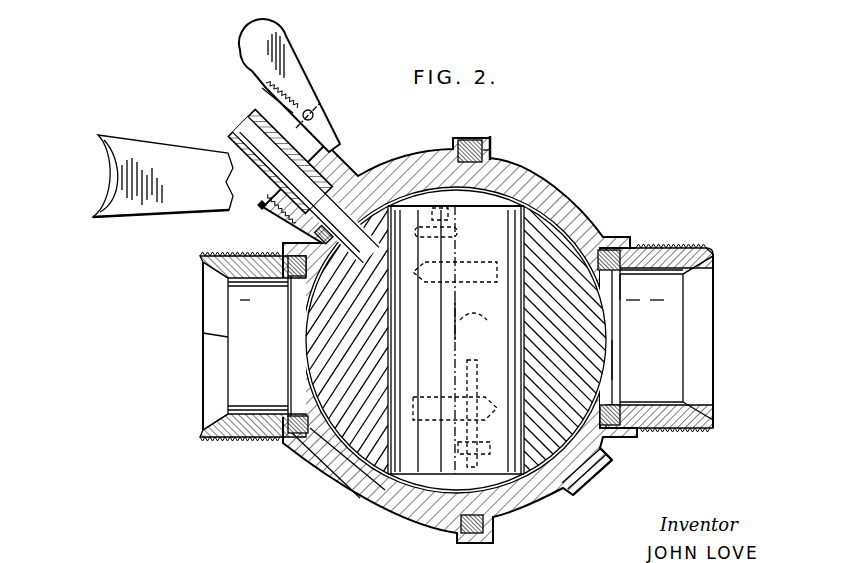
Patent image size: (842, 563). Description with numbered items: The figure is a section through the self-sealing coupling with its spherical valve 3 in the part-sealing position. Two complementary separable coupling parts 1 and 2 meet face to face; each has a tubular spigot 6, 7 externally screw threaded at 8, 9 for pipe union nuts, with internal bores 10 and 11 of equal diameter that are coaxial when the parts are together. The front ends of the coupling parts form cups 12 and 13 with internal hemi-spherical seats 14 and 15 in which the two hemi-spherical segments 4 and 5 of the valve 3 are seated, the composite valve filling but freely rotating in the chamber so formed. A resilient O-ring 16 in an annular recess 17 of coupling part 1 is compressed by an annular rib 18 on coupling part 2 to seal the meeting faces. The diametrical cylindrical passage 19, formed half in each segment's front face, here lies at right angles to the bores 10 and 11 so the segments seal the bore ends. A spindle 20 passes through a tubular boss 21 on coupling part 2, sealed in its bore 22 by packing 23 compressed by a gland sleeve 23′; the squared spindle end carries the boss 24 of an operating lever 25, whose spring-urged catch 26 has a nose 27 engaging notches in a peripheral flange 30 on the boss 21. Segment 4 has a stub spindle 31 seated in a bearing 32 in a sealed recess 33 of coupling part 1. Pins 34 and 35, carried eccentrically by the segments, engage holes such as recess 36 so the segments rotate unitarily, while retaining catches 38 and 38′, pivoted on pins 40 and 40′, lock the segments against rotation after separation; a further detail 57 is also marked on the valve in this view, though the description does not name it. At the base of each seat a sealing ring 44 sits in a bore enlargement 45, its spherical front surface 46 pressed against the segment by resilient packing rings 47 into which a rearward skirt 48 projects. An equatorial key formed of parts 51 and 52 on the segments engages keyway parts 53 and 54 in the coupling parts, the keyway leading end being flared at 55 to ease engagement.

The coupling part 1 is at (618, 233).
The coupling part 2 is at (388, 521).
The spherical valve 3 is at (445, 493).
The hemi-spherical segment 4 is at (594, 362).
The hemi-spherical segment 5 is at (300, 352).
The tubular spigot 6 is at (667, 250).
The tubular spigot 7 is at (223, 256).
The external screw thread 8 is at (692, 250).
The external screw thread 9 is at (202, 256).
The internal bore 10 is at (683, 297).
The internal bore 11 is at (250, 410).
The cup 12 is at (527, 177).
The cup 13 is at (410, 165).
The hemi-spherical seat 14 is at (540, 187).
The hemi-spherical seat 15 is at (433, 177).
The O-ring 16 is at (492, 152).
The annular recess 17 is at (491, 137).
The annular rib 18 is at (470, 138).
The diametrical cylindrical passage 19 is at (527, 382).
The spindle 20 is at (347, 178).
The tubular boss 21 is at (368, 182).
The bore 22 is at (322, 233).
The packing 23 is at (413, 170).
The gland sleeve 23′ is at (297, 218).
The boss 24 is at (228, 152).
The operating lever 25 is at (142, 147).
The spring-urged catch 26 is at (292, 60).
The nose 27 is at (325, 137).
The peripheral flange 30 is at (258, 212).
The stub spindle 31 is at (587, 473).
The bearing 32 is at (609, 458).
The sealed recess 33 is at (592, 487).
The pin 34 is at (305, 310).
The pin 35 is at (456, 340).
The hole or recess 36 is at (430, 260).
The retaining catch 38 is at (478, 326).
The retaining catch 38′ is at (448, 215).
The pivot pin 40 is at (458, 436).
The pivot pin 40′ is at (459, 233).
The sealing ring 44 is at (615, 235).
The bore enlargement 45 is at (590, 232).
The spherical front surface 46 is at (592, 275).
The resilient packing ring 47 is at (622, 250).
The rearwardly directed skirt 48 is at (632, 274).
The key part 51 is at (578, 225).
The key part 52 is at (350, 463).
The keyway part 53 is at (567, 223).
The keyway part 54 is at (343, 452).
The flared leading end 55 is at (482, 377).
The pin tip 57 is at (481, 437).